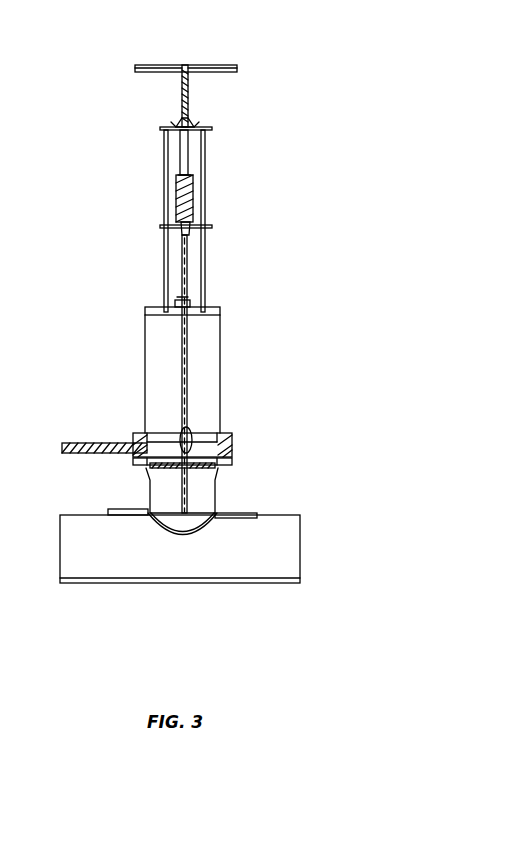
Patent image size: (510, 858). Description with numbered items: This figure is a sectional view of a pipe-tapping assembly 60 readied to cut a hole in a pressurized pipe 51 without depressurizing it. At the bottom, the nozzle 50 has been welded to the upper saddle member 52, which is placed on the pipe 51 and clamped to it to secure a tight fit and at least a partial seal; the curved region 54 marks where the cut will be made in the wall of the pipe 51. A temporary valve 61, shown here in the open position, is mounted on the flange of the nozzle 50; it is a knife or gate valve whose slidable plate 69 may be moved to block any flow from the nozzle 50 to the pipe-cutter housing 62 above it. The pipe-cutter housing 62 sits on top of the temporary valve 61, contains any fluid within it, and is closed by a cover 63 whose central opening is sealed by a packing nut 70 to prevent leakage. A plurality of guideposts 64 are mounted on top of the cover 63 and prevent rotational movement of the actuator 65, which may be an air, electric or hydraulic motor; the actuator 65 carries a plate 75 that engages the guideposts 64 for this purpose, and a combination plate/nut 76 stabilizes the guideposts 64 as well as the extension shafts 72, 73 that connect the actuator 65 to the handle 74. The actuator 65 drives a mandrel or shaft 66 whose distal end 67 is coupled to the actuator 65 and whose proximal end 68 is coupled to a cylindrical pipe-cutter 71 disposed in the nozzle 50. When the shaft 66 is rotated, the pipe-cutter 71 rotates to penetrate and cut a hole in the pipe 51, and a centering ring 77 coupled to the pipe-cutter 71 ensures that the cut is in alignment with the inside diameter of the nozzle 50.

The nozzle 50 is at (220, 475).
The pressurized pipe 51 is at (73, 584).
The upper saddle member 52 is at (130, 516).
The dome 54 is at (183, 534).
The pipe-tapping assembly 60 is at (283, 140).
The temporary valve 61 is at (128, 433).
The pipe-cutter housing 62 is at (220, 363).
The cover 63 is at (220, 309).
The guideposts 64 is at (164, 175).
The actuator 65 is at (176, 203).
The shaft 66 is at (181, 353).
The distal end 67 is at (191, 232).
The proximal end 68 is at (183, 435).
The slidable plate 69 is at (107, 454).
The packing nut 70 is at (190, 302).
The cylindrical pipe-cutter 71 is at (218, 495).
The extension shaft 72 is at (183, 150).
The extension shaft 73 is at (183, 98).
The handle 74 is at (218, 64).
The plate 75 is at (195, 215).
The combination plate/nut 76 is at (191, 124).
The centering ring 77 is at (205, 462).